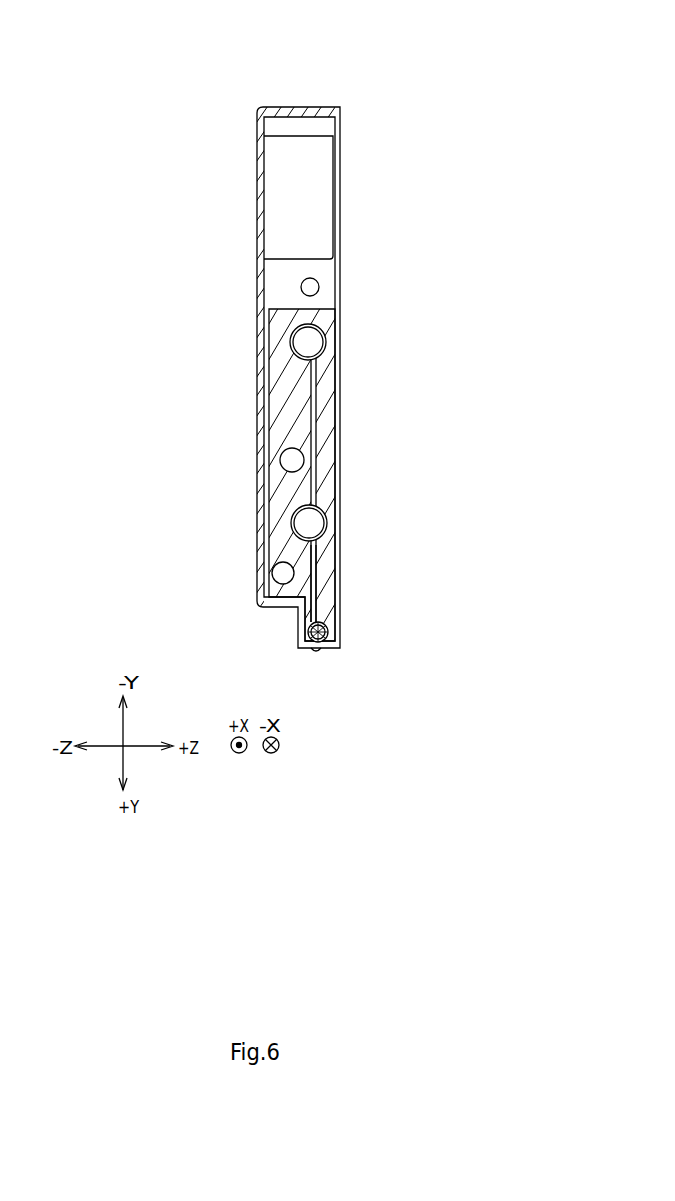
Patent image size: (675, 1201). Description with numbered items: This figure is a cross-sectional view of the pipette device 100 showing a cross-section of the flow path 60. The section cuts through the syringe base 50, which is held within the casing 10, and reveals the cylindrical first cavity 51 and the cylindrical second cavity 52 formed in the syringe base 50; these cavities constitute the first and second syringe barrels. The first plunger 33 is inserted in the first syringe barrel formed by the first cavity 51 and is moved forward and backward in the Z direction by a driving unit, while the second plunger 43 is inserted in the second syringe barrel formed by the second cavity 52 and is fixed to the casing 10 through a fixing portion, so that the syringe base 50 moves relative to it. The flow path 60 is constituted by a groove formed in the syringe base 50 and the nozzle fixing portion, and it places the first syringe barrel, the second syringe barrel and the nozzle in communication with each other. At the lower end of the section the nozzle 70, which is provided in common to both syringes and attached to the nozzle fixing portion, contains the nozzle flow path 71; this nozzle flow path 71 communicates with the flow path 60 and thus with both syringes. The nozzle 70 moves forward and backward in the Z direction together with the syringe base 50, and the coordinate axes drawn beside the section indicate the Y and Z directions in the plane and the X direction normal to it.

The pipette device 100 is at (305, 353).
The casing 10 is at (257, 183).
The syringe base 50 is at (273, 345).
The flow path 60 is at (283, 414).
The first cavity 51 is at (326, 338).
The first plunger 33 is at (318, 359).
The second cavity 52 is at (327, 520).
The second plunger 43 is at (318, 539).
The nozzle 70 is at (328, 631).
The nozzle flow path 71 is at (316, 651).